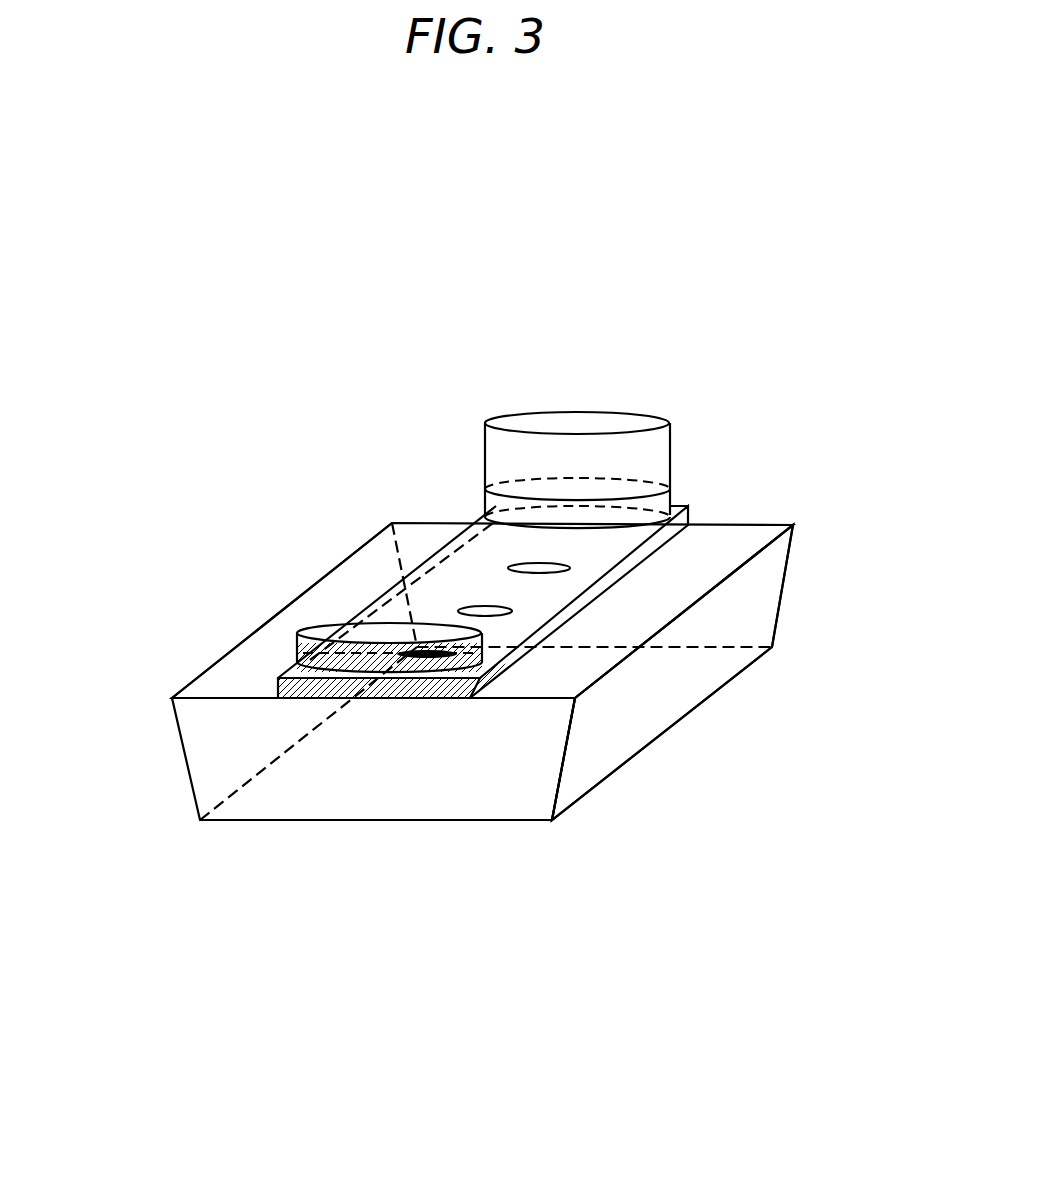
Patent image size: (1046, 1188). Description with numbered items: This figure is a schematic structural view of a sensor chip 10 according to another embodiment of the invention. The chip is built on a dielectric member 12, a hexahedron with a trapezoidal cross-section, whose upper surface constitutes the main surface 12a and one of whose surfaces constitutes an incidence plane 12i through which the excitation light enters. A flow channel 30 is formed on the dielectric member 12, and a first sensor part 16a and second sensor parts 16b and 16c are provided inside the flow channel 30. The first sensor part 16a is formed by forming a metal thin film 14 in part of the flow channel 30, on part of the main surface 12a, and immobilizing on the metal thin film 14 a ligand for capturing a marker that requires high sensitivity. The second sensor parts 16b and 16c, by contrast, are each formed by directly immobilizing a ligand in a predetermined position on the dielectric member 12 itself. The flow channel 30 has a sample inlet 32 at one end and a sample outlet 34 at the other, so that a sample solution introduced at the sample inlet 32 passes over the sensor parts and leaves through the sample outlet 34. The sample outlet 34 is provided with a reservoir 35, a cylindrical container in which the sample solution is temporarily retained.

The sensor chip 10 is at (667, 285).
The dielectric member 12 is at (488, 773).
The main surface 12a is at (267, 653).
The incidence plane 12i is at (610, 740).
The metal thin film 14 is at (335, 672).
The first sensor part 16a is at (420, 640).
The second sensor part 16b is at (480, 605).
The second sensor part 16c is at (535, 562).
The flow channel 30 is at (557, 590).
The sample inlet 32 is at (538, 649).
The sample outlet 34 is at (653, 503).
The reservoir 35 is at (628, 452).